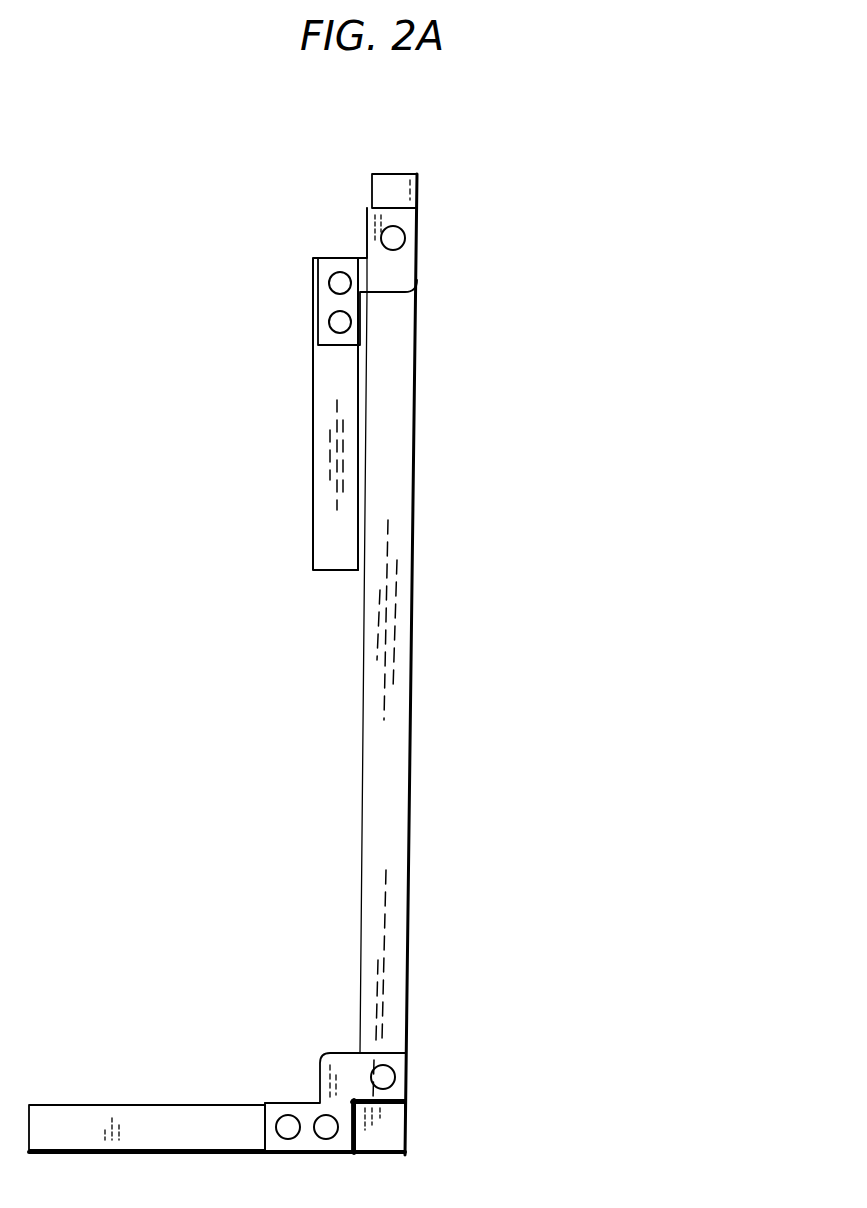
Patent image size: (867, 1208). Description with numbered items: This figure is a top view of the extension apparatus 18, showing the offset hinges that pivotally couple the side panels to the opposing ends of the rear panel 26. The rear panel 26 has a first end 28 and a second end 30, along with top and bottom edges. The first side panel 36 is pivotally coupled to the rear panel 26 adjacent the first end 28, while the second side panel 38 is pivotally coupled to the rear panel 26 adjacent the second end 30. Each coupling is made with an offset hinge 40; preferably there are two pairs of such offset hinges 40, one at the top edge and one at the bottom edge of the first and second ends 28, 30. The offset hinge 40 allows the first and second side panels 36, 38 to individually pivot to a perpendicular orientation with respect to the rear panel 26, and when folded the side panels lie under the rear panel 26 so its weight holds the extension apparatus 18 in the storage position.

The extension apparatus 18 is at (505, 580).
The rear panel 26 is at (410, 795).
The first end 28 is at (405, 1142).
The second end 30 is at (397, 175).
The first side panel 36 is at (113, 1103).
The second side panel 38 is at (312, 437).
The offset hinge 40 is at (403, 262).